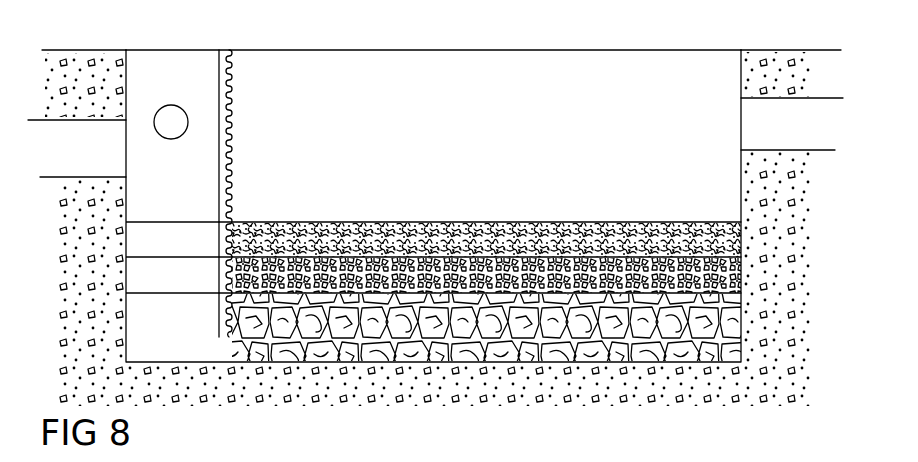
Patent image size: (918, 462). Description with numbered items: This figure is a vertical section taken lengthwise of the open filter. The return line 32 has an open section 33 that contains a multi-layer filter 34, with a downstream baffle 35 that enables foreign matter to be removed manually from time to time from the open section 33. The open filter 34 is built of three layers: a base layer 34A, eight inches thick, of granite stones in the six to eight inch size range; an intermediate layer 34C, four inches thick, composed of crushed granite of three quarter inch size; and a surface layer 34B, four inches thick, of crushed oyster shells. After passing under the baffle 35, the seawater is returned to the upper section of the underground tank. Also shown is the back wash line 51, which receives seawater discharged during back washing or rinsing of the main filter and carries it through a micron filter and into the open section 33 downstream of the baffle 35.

The return line 32 is at (80, 162).
The open section 33 is at (466, 62).
The multi-layer filter 34 is at (480, 294).
The base layer 34A is at (481, 352).
The surface layer 34B is at (354, 222).
The intermediate layer 34C is at (657, 224).
The downstream baffle 35 is at (216, 61).
The back wash line 51 is at (166, 139).